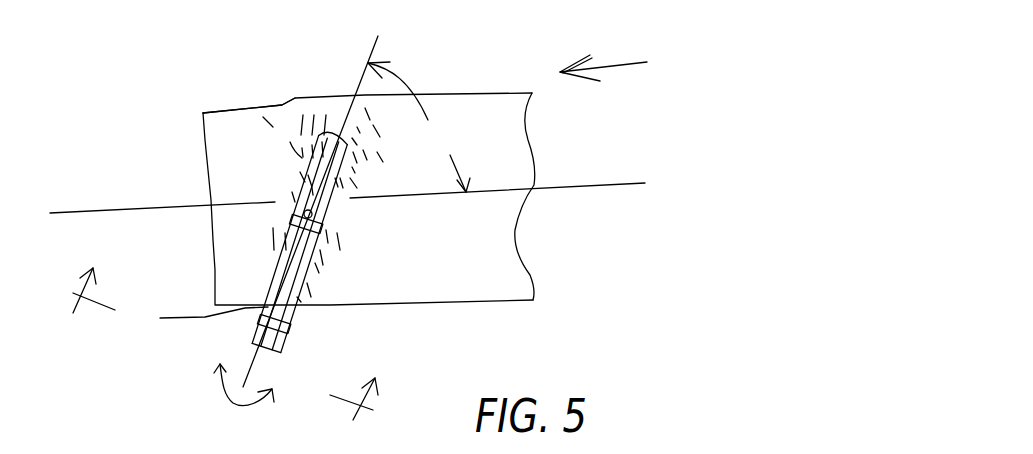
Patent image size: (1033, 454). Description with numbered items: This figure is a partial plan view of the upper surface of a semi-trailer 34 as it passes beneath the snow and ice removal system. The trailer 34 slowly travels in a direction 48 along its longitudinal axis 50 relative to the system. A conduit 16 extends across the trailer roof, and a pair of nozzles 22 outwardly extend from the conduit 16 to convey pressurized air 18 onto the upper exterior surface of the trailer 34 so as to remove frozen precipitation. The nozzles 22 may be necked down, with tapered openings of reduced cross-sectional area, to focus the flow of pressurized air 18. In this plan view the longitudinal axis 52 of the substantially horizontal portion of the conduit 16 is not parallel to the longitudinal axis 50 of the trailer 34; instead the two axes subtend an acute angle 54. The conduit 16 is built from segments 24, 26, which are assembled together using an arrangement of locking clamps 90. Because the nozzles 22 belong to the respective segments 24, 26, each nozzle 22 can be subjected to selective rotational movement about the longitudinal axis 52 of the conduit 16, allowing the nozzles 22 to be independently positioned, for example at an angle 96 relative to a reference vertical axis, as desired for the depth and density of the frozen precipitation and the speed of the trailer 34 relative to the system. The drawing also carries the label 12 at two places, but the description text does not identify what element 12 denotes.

The direction arrow 12 is at (239, 326).
The conduit 16 is at (282, 343).
The pressurized air 18 is at (258, 100).
The nozzles 22 is at (342, 218).
The segment of conduit 24 is at (198, 312).
The segment of conduit 26 is at (296, 205).
The semi-trailer 34 is at (460, 93).
The direction 48 is at (623, 63).
The longitudinal axis 50 is at (602, 183).
The longitudinal axis 52 is at (362, 88).
The acute angle 54 is at (419, 127).
The locking clamps 90 is at (292, 217).
The angle 96 is at (223, 390).